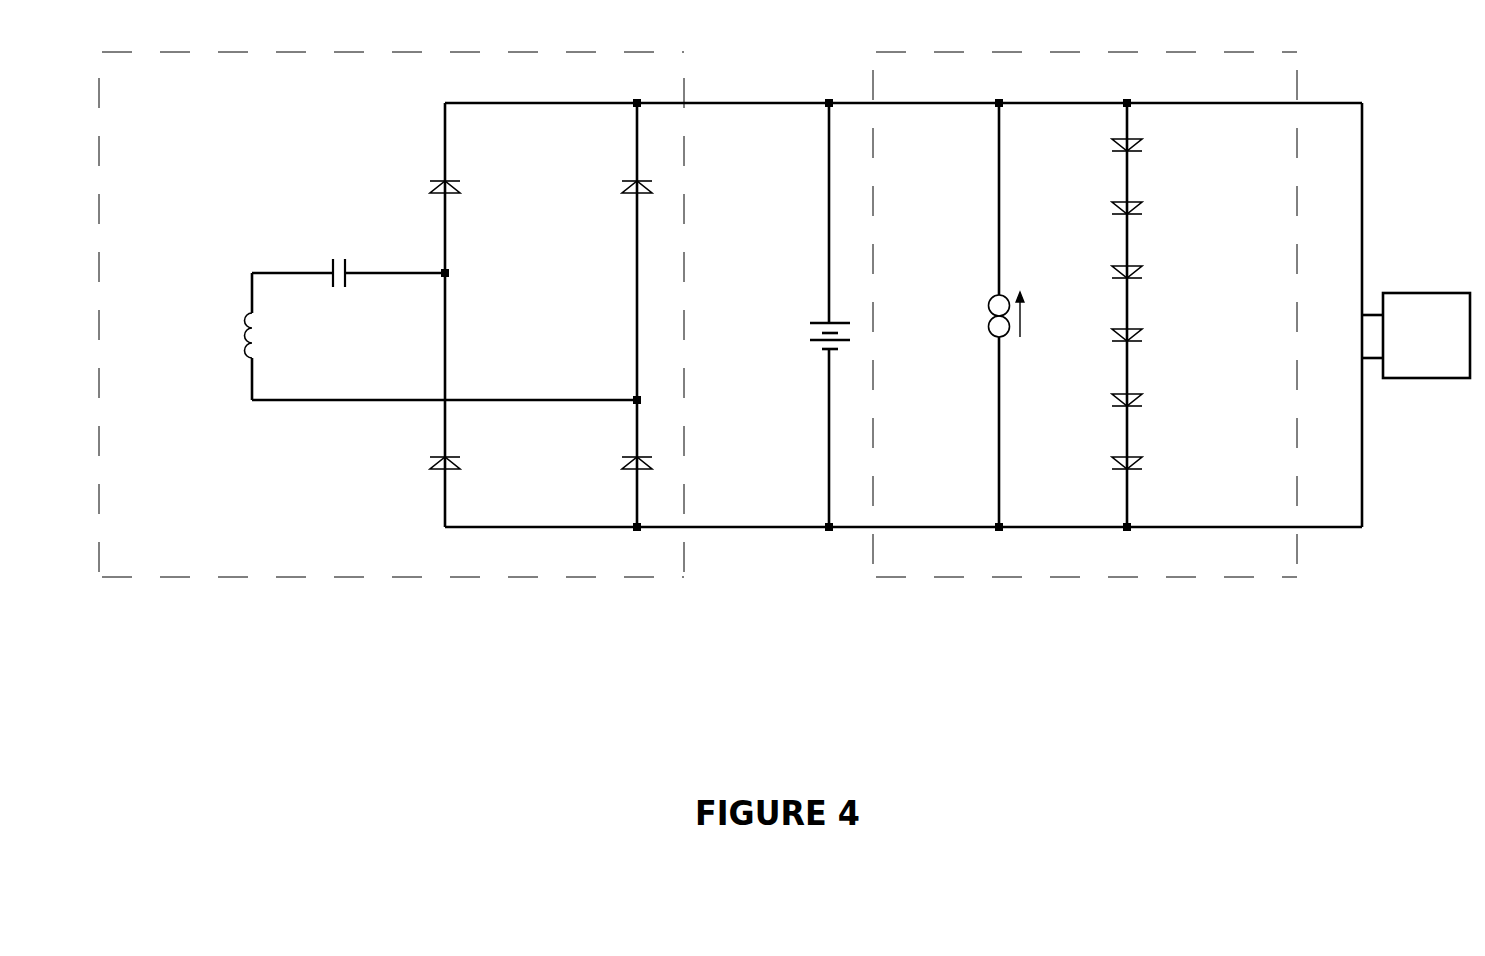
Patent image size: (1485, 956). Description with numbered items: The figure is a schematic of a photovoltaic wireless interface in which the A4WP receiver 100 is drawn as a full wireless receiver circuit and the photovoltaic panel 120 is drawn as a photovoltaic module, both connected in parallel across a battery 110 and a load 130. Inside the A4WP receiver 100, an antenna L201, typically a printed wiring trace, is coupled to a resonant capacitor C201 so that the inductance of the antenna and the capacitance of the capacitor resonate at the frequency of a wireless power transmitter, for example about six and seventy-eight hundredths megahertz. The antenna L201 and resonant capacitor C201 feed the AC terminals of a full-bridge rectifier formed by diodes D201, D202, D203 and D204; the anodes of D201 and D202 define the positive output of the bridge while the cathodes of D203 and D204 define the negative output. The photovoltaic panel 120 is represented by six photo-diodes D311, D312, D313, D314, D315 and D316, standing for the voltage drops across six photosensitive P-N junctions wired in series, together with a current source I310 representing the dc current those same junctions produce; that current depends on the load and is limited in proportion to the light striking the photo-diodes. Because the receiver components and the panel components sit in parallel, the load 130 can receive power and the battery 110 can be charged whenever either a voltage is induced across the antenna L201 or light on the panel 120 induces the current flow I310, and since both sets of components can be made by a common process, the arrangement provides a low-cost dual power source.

The A4WP receiver 100 is at (388, 603).
The photovoltaic panel 120 is at (1093, 605).
The load 130 is at (1426, 309).
The battery 110 is at (788, 315).
The antenna L201 is at (189, 326).
The resonant capacitor C201 is at (350, 299).
The diode D201 is at (386, 179).
The diode D202 is at (580, 181).
The diode D203 is at (383, 467).
The diode D204 is at (574, 467).
The current source I310 is at (955, 315).
The photo-diode D311 is at (1187, 152).
The photo-diode D312 is at (1187, 215).
The photo-diode D313 is at (1187, 279).
The photo-diode D314 is at (1187, 342).
The photo-diode D315 is at (1187, 405).
The photo-diode D316 is at (1187, 468).